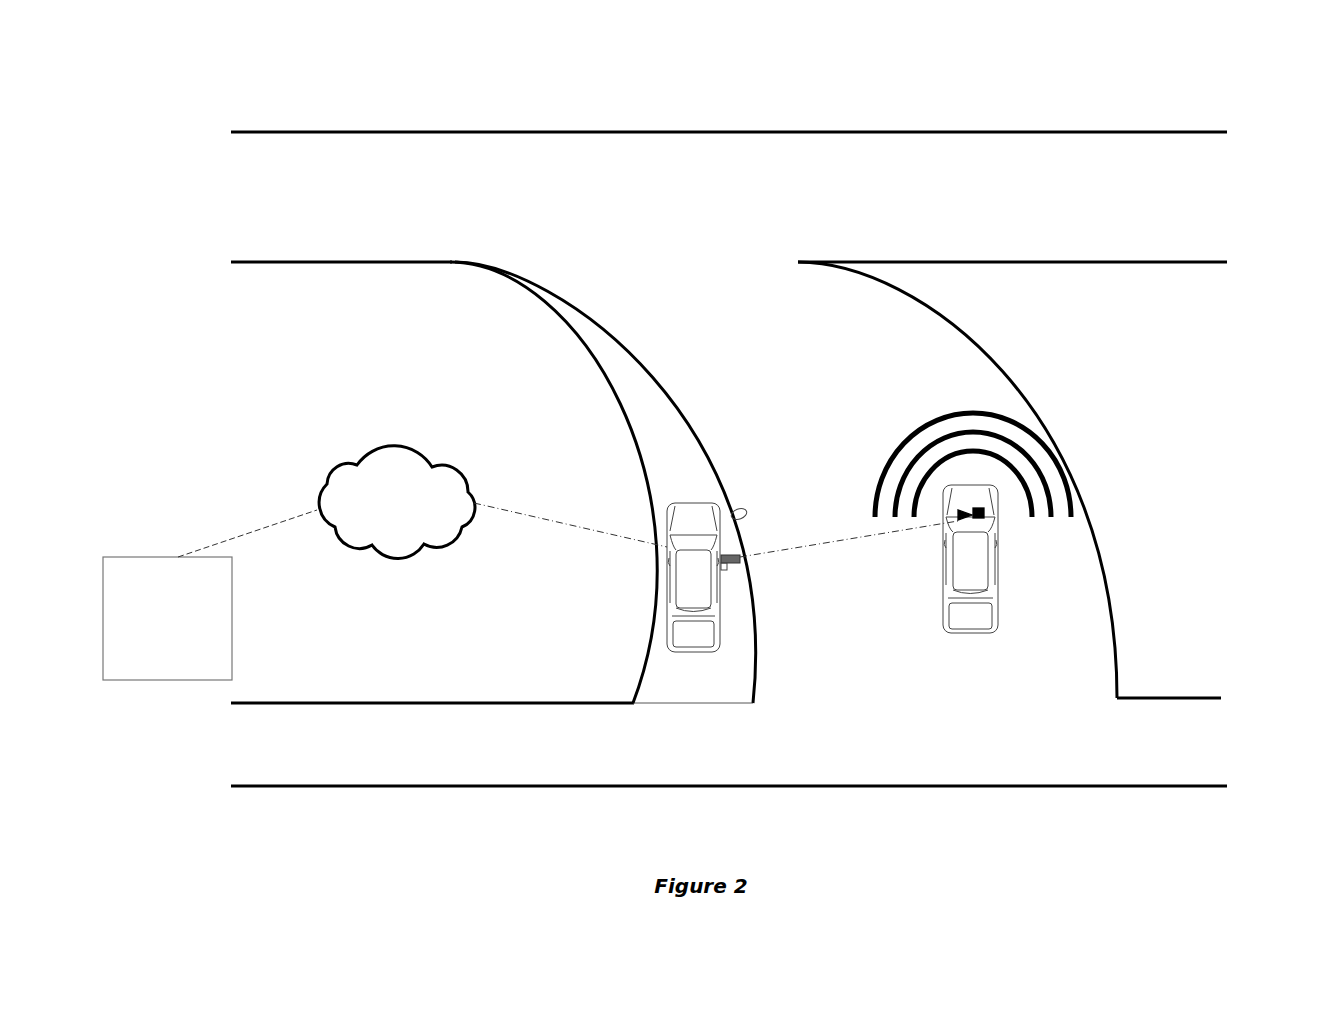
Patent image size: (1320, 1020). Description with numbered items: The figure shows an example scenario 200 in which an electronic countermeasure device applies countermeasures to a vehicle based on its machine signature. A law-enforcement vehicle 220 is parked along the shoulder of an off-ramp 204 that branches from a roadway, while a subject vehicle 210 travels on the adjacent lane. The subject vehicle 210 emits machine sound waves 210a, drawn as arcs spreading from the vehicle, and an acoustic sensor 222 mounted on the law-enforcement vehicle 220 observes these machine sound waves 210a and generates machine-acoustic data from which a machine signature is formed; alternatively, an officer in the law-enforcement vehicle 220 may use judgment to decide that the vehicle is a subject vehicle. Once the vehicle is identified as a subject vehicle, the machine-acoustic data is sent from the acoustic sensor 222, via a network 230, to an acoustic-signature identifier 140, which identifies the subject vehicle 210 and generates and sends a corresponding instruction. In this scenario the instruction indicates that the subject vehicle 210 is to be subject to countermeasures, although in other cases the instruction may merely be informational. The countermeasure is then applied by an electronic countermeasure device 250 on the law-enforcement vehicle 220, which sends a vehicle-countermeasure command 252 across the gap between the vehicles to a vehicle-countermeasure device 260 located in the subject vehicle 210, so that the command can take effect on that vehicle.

The acoustic-signature identifier 140 is at (149, 667).
The scenario 200 is at (1232, 62).
The off-ramp 204 is at (613, 313).
The subject vehicle 210 is at (980, 634).
The machine sound waves 210a is at (1008, 413).
The law-enforcement vehicle 220 is at (668, 653).
The acoustic sensor 222 is at (745, 508).
The network 230 is at (373, 530).
The electronic countermeasure (ECM) device 250 is at (740, 555).
The vehicle-countermeasure (VCM) command 252 is at (773, 555).
The vehicle-countermeasure device 260 is at (985, 515).